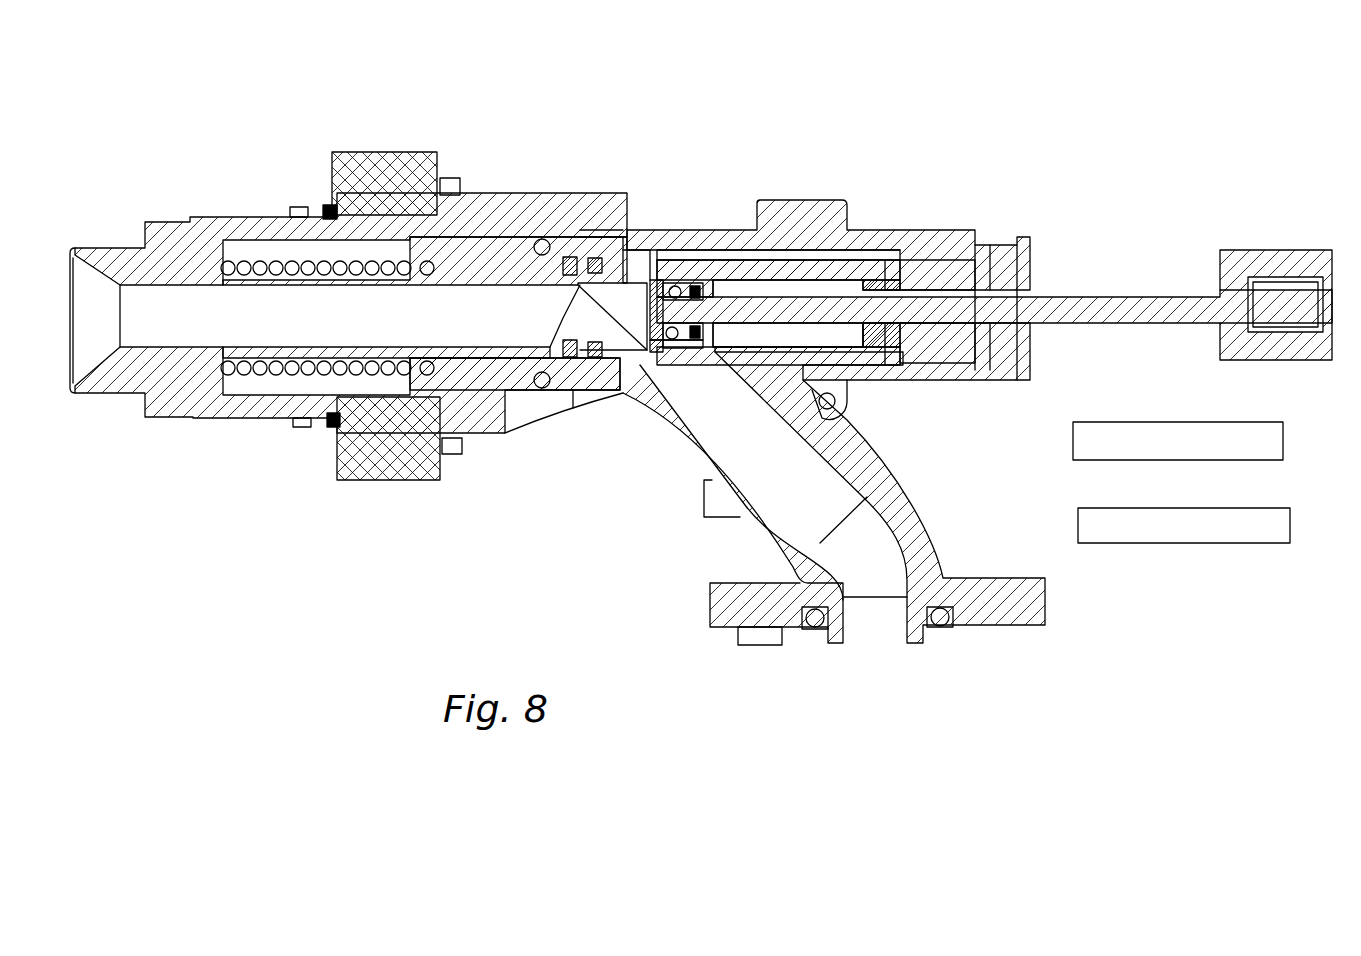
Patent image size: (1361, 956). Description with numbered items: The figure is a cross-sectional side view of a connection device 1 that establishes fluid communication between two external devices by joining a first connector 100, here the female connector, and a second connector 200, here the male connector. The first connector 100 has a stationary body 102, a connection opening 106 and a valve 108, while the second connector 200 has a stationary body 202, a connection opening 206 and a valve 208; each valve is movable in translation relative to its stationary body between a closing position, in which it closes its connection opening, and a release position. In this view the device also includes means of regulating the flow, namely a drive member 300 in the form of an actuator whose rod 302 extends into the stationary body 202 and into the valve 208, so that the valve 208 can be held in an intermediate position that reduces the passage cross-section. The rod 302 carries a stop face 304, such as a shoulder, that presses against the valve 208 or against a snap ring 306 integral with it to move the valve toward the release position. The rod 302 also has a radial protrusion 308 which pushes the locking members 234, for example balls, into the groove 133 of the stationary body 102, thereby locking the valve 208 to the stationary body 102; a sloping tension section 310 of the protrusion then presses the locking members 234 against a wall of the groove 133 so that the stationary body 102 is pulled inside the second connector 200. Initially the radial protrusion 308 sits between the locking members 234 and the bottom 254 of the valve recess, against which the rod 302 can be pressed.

The connection device 1 is at (828, 72).
The first connector 100 is at (247, 180).
The stationary body 102 is at (645, 272).
The connection opening 106 is at (640, 392).
The valve 108 is at (500, 238).
The groove 133 is at (672, 280).
The second connector 200 is at (999, 208).
The stationary body 202 is at (916, 250).
The connection opening 206 is at (421, 337).
The valve 208 is at (821, 273).
The locking members 234 is at (683, 287).
The bottom 254 is at (710, 300).
The drive member 300 is at (1134, 265).
The rod 302 is at (848, 365).
The stop face 304 is at (935, 355).
The snap ring 306 is at (905, 355).
The radial protrusion 308 is at (652, 342).
The sloping tension section 310 is at (665, 345).